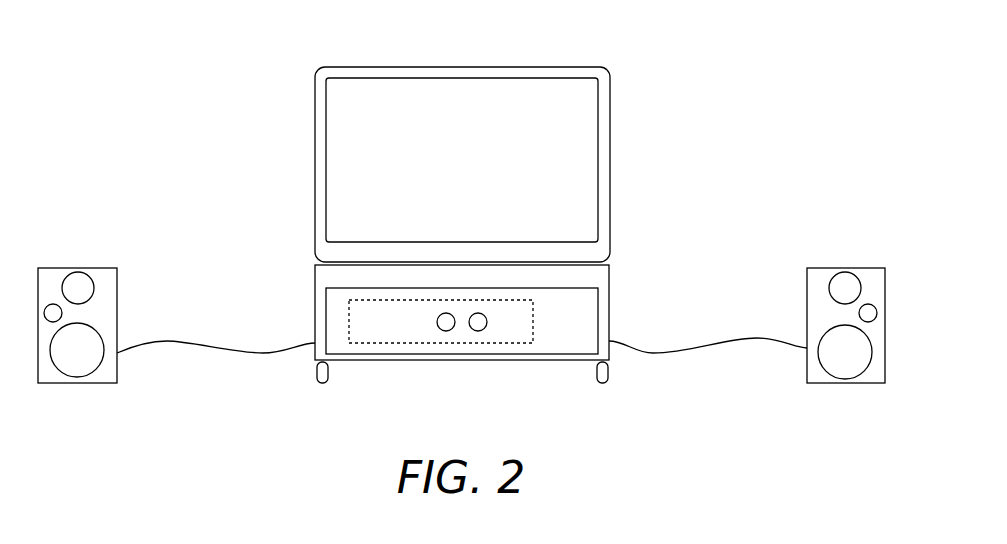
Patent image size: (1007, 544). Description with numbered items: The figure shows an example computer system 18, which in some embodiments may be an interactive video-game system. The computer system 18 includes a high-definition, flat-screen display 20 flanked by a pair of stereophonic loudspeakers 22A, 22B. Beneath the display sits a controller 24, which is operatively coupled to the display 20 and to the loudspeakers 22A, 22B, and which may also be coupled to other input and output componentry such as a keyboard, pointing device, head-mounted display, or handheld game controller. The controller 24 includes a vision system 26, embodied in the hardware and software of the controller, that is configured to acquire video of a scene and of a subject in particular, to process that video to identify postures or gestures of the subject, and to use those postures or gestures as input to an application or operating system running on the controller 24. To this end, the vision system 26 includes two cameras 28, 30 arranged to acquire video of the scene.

The computer system 18 is at (157, 100).
The flat-screen display 20 is at (452, 169).
The stereophonic loudspeaker 22A is at (113, 323).
The stereophonic loudspeaker 22B is at (843, 324).
The controller 24 is at (559, 332).
The vision system 26 is at (361, 332).
The camera 28 is at (438, 327).
The camera 30 is at (487, 324).